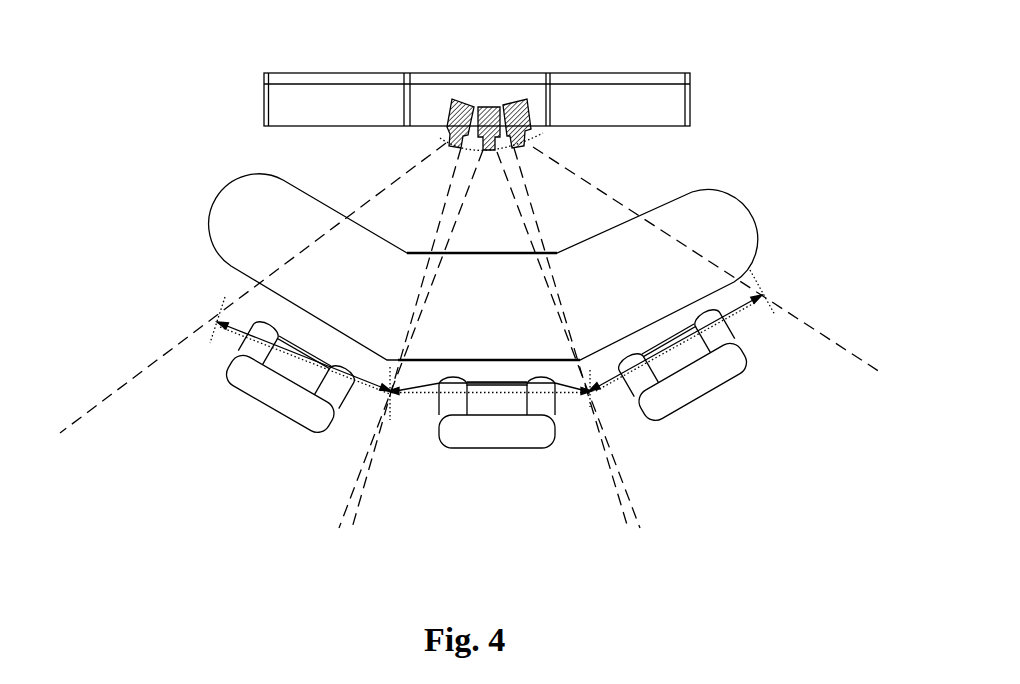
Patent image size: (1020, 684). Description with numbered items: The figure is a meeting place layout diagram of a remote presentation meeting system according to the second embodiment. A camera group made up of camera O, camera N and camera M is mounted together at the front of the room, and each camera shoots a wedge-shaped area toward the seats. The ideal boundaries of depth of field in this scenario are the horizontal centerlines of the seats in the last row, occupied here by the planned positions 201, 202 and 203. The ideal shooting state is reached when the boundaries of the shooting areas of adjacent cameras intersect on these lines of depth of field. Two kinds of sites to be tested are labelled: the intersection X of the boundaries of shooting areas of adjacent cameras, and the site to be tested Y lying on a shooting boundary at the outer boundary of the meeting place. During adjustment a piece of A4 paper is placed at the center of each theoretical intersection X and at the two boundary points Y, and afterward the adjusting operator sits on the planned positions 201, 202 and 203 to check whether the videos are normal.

The planned position 201 is at (683, 365).
The planned position 202 is at (497, 412).
The planned position 203 is at (290, 377).
The camera O is at (459, 99).
The camera N is at (490, 110).
The camera M is at (519, 102).
The intersection of boundaries of shooting areas of adjacent cameras X is at (391, 391).
The site to be tested on the shooting boundary on the outer boundaries of the meetin Y is at (217, 322).